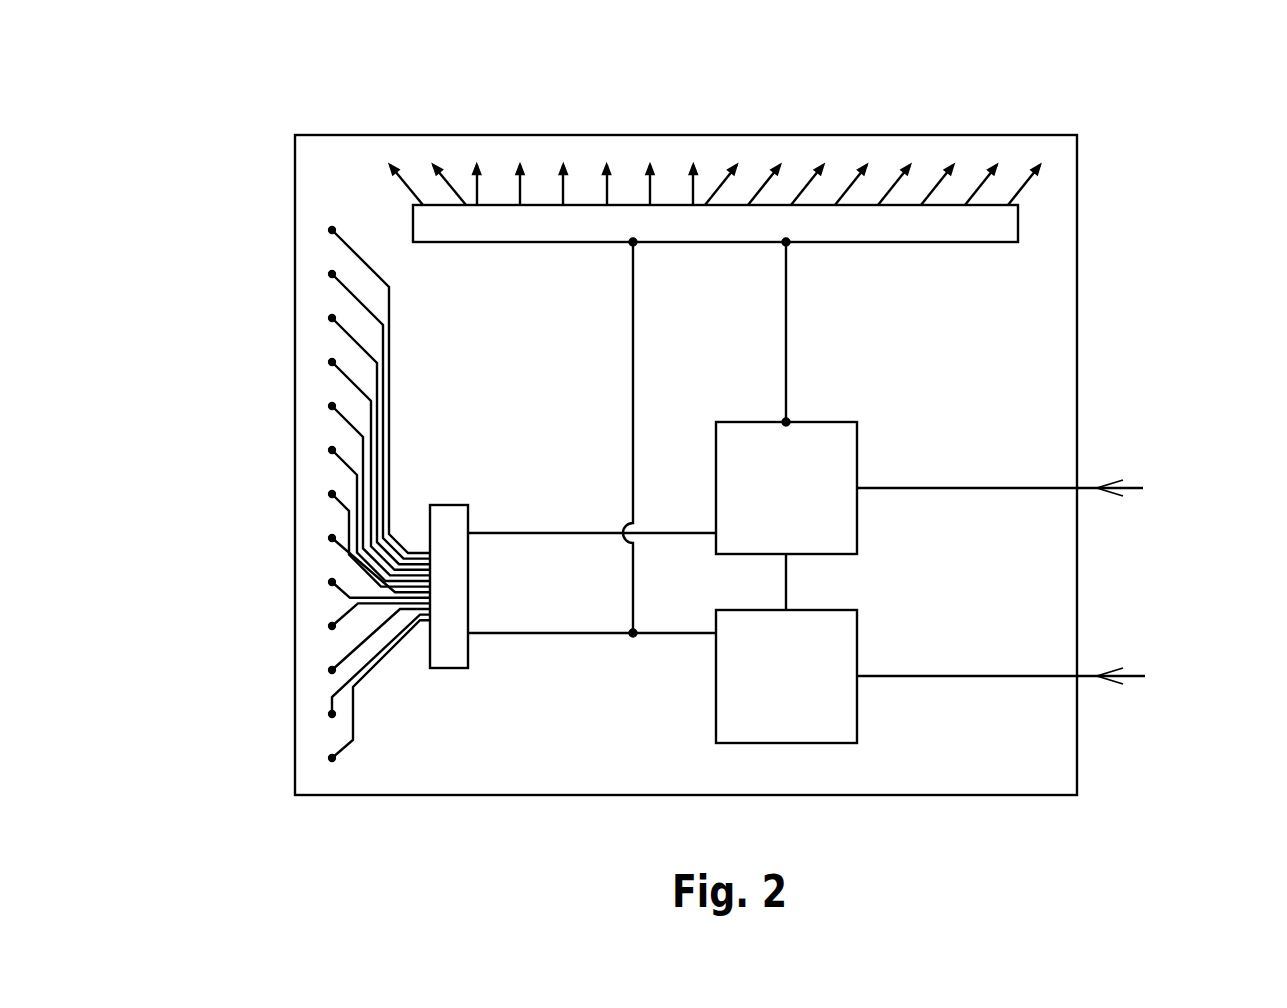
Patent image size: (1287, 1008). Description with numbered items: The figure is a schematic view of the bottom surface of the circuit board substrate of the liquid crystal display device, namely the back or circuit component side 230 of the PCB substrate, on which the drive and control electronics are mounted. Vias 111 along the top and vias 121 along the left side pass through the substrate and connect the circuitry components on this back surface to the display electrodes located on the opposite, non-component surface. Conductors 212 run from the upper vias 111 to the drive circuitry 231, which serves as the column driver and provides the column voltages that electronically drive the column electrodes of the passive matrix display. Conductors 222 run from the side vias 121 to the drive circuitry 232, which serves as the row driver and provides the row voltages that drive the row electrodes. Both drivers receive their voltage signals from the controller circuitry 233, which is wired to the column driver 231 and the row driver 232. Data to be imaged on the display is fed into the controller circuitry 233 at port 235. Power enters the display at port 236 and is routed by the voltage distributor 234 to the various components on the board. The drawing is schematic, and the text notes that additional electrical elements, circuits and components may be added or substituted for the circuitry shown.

The vias 111 is at (477, 164).
The vias 121 is at (331, 273).
The conductors 212 is at (479, 187).
The conductors 222 is at (352, 296).
The circuit component side 230 is at (1020, 342).
The drive circuitry 231 is at (743, 225).
The drive circuitry 232 is at (457, 518).
The controller circuitry 233 is at (780, 472).
The voltage distributor 234 is at (803, 692).
The port 235 is at (1101, 480).
The port 236 is at (1105, 668).